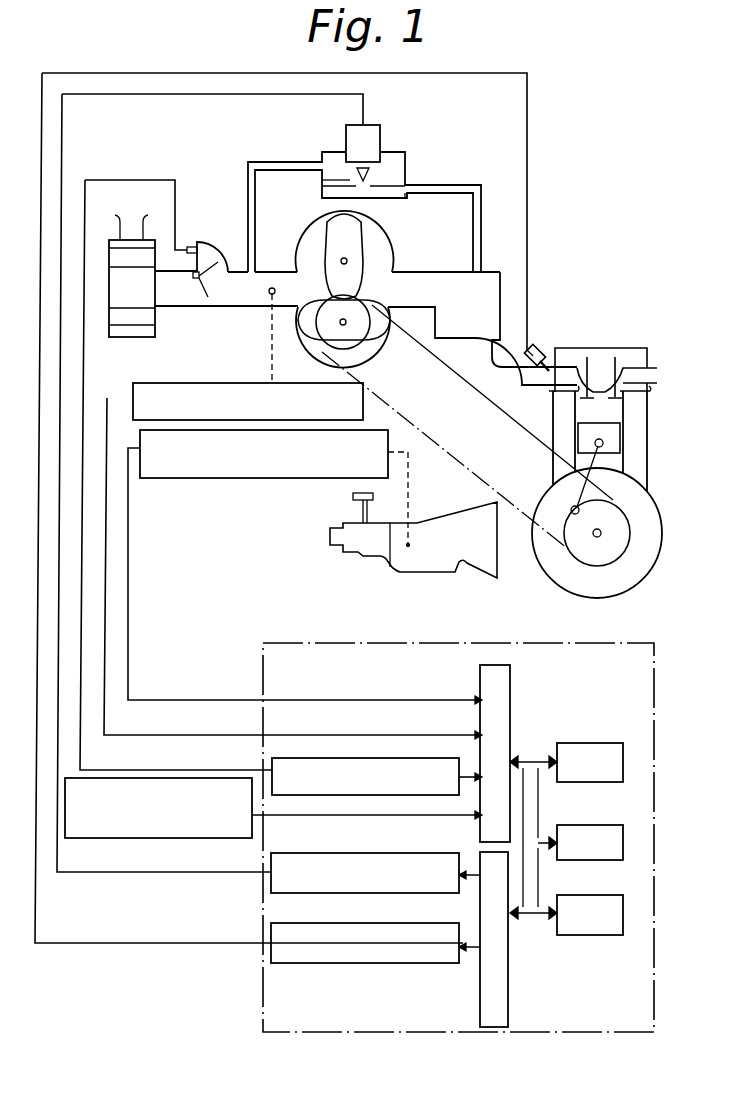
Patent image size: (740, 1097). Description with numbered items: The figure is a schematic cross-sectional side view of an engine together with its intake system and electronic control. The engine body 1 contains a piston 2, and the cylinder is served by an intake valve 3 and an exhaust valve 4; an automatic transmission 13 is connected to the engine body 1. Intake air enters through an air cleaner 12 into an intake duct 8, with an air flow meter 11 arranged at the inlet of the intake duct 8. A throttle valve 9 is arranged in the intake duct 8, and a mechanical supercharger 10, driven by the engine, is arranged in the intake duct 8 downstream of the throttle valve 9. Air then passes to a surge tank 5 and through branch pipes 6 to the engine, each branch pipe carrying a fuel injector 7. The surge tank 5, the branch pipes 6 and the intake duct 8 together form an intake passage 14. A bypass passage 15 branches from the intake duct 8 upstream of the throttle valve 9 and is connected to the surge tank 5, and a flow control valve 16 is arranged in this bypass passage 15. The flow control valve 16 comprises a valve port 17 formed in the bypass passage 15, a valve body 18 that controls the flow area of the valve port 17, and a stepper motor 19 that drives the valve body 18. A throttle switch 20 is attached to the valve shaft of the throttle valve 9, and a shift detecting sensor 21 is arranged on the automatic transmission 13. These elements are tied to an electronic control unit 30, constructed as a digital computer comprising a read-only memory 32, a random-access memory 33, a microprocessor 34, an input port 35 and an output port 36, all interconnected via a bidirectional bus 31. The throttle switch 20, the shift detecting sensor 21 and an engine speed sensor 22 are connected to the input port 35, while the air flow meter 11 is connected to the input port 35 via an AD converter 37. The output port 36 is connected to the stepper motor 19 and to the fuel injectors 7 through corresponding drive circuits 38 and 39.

The engine body 1 is at (608, 450).
The piston 2 is at (612, 441).
The intake valve 3 is at (590, 355).
The exhaust valve 4 is at (630, 355).
The surge tank 5 is at (497, 272).
The branch pipes 6 is at (541, 383).
The fuel injectors 7 is at (541, 346).
The intake duct 8 is at (273, 271).
The throttle valve 9 is at (270, 302).
The mechanical supercharger 10 is at (390, 236).
The air flow meter 11 is at (214, 242).
The air cleaner 12 is at (137, 338).
The automatic transmission 13 is at (431, 565).
The intake passage 14 is at (430, 285).
The bypass passage 15 is at (262, 167).
The flow control valve 16 is at (369, 161).
The valve port 17 is at (350, 182).
The valve body 18 is at (376, 178).
The stepper motor 19 is at (346, 142).
The throttle switch 20 is at (218, 383).
The shift detecting sensor 21 is at (190, 480).
The engine speed sensor 22 is at (131, 838).
The electronic control unit 30 is at (372, 643).
The bidirectional bus 31 is at (528, 920).
The read-only memory (ROM) 32 is at (576, 743).
The random-access memory (RAM) 33 is at (576, 825).
The microprocessor (CPU) 34 is at (574, 935).
The input port 35 is at (510, 705).
The output port 36 is at (510, 975).
The AD converter 37 is at (400, 797).
The drive circuit 38 is at (311, 853).
The drive circuit 39 is at (311, 923).